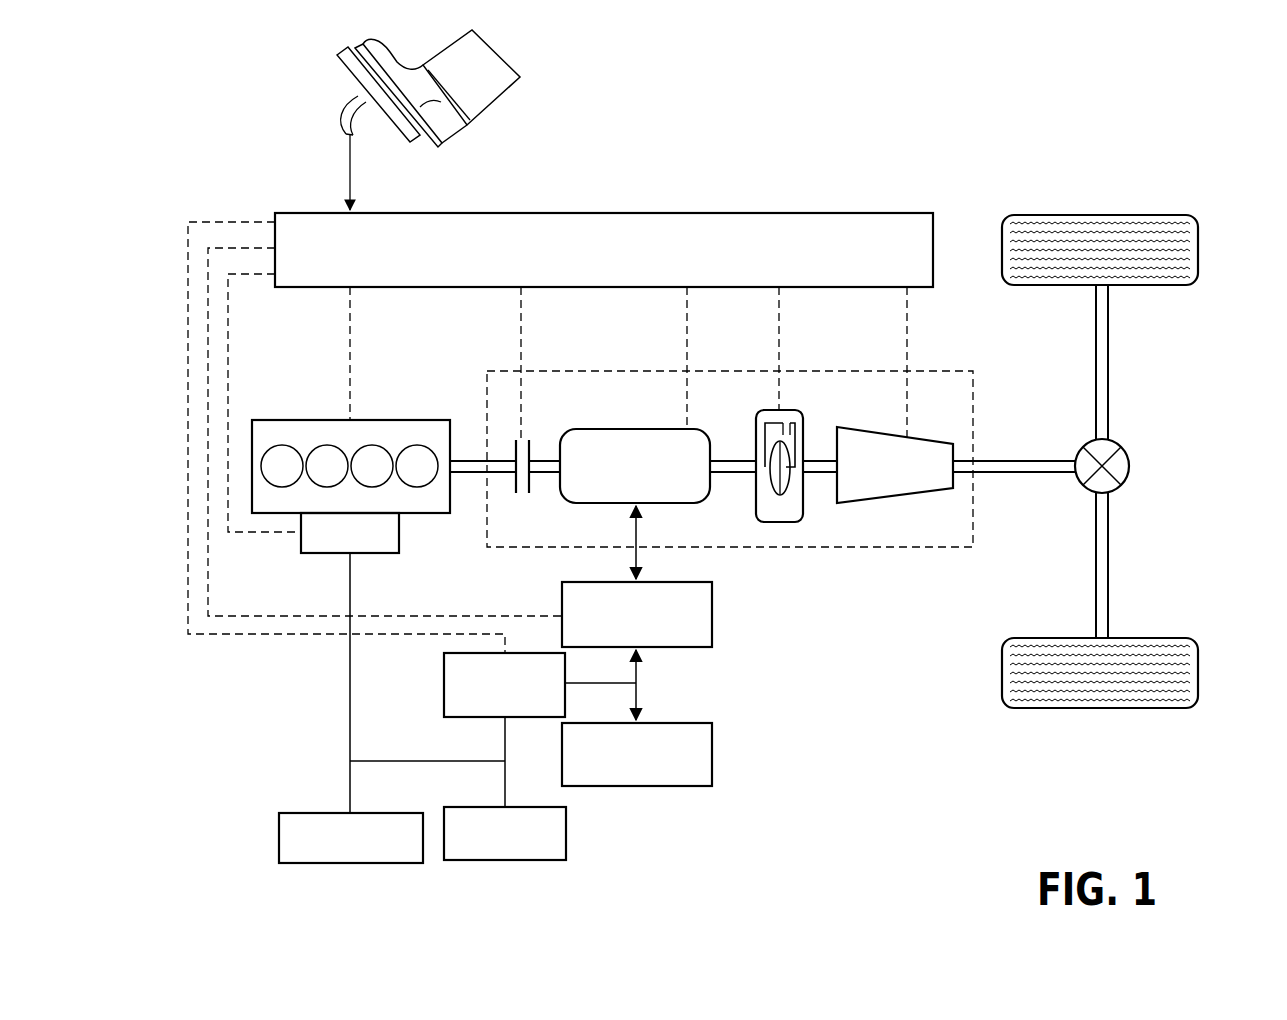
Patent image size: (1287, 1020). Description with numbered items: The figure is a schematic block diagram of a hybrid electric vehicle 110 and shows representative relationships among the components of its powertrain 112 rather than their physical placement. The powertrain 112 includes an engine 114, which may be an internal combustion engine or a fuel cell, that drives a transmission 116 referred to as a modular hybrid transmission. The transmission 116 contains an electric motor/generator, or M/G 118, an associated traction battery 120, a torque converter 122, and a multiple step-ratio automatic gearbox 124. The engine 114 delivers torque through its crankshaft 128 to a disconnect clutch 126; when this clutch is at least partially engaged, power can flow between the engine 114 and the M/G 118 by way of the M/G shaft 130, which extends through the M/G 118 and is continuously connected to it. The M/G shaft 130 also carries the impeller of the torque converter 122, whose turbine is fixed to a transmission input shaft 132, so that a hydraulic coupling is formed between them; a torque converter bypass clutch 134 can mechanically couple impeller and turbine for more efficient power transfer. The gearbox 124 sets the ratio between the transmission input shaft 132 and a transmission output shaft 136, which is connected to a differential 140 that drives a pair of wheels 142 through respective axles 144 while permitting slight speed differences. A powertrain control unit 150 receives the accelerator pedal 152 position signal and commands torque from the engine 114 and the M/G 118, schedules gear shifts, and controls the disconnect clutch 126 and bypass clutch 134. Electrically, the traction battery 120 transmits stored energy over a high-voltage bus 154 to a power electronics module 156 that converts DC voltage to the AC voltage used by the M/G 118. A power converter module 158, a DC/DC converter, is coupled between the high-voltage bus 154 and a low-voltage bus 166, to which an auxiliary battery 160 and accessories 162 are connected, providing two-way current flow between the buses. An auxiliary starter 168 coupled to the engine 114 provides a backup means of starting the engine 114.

The hybrid electric vehicle 110 is at (883, 132).
The powertrain 112 is at (856, 664).
The engine 114 is at (305, 420).
The transmission 116 is at (747, 372).
The electric motor/generator (M/G) 118 is at (637, 429).
The traction battery 120 is at (713, 754).
The torque converter 122 is at (780, 522).
The gearbox 124 is at (897, 502).
The disconnect clutch 126 is at (533, 483).
The crankshaft 128 is at (482, 458).
The M/G shaft 130 is at (545, 458).
The transmission input shaft 132 is at (813, 457).
The torque converter bypass clutch 134 is at (788, 422).
The transmission output shaft 136 is at (1028, 458).
The differential 140 is at (1129, 467).
The wheels 142 is at (1102, 213).
The axles 144 is at (1110, 365).
The powertrain control unit (PCU) 150 is at (312, 213).
The accelerator pedal 152 is at (346, 88).
The high-voltage bus 154 is at (640, 692).
The power electronics module 156 is at (713, 613).
The power converter module 158 is at (445, 684).
The auxiliary battery 160 is at (567, 843).
The accessories 162 is at (278, 834).
The low-voltage bus 166 is at (350, 667).
The auxiliary starter 168 is at (402, 532).